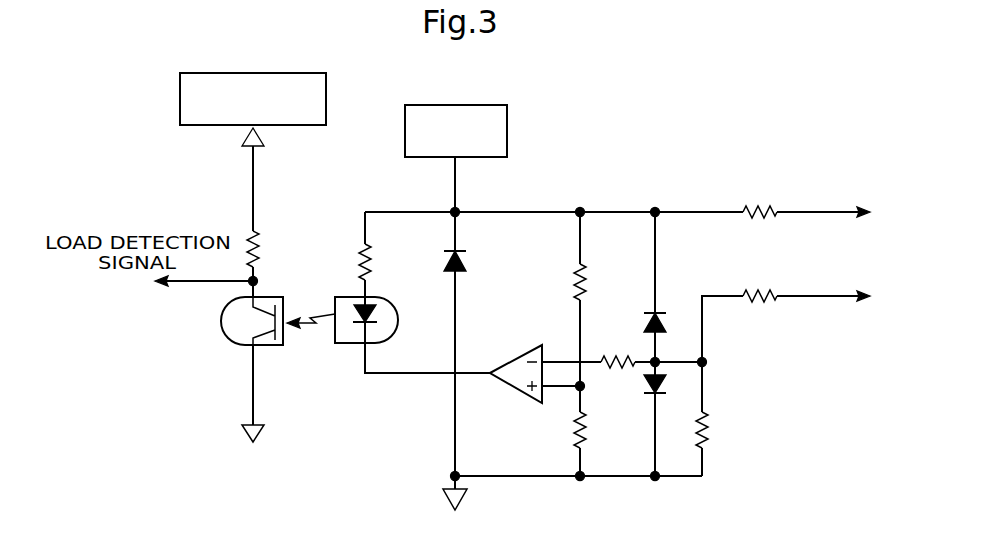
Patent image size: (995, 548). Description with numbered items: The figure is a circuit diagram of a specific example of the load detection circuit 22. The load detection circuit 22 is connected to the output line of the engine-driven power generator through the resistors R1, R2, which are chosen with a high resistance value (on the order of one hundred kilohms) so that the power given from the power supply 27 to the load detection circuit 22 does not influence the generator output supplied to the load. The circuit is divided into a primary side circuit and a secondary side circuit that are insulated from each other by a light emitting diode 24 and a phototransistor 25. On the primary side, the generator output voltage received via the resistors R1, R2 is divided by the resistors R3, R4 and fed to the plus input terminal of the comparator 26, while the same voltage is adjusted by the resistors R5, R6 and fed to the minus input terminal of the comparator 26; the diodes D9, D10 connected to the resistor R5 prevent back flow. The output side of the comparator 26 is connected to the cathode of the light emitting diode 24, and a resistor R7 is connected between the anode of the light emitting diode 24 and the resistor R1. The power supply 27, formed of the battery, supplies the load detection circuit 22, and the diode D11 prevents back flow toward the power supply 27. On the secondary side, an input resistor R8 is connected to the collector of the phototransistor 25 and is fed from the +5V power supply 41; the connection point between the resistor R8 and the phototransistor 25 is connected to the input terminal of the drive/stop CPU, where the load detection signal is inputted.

The load detection circuit 22 is at (656, 148).
The light emitting diode 24 is at (383, 322).
The phototransistor 25 is at (240, 329).
The comparator 26 is at (515, 392).
The power supply 27 is at (478, 157).
The +5V power supply 41 is at (280, 125).
The resistor R1 is at (763, 188).
The resistor R2 is at (763, 272).
The resistor R3 is at (562, 276).
The resistor R4 is at (558, 425).
The resistor R5 is at (620, 347).
The resistor R6 is at (720, 430).
The resistor R7 is at (377, 262).
The input resistor R8 is at (262, 254).
The diode D9 is at (640, 322).
The diode D10 is at (637, 390).
The diode D11 is at (470, 262).